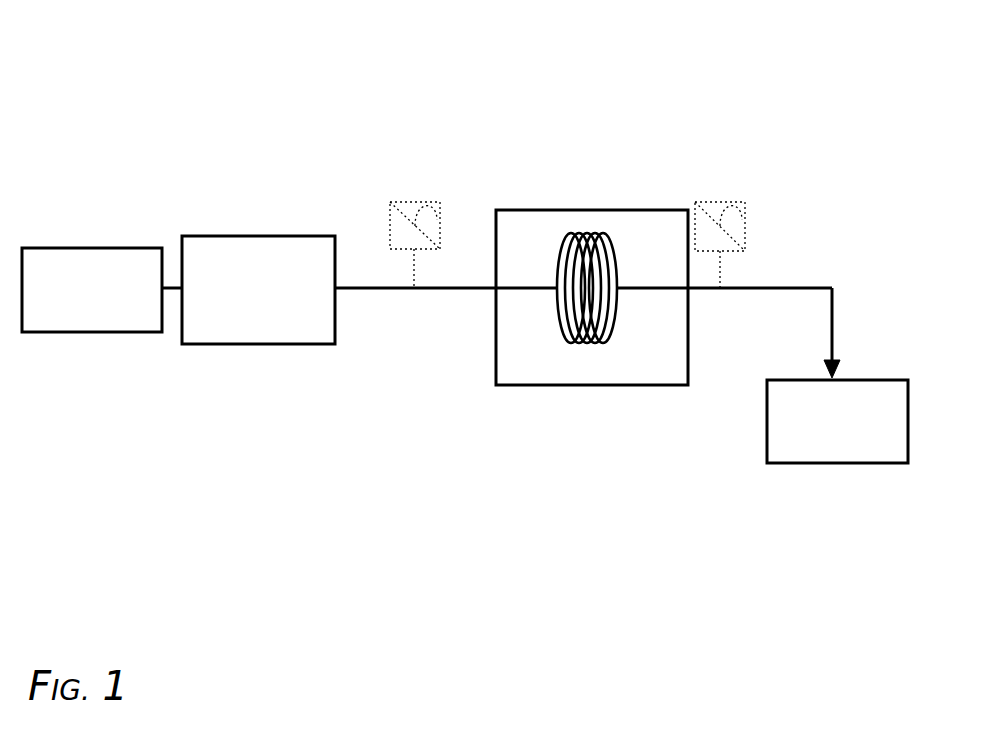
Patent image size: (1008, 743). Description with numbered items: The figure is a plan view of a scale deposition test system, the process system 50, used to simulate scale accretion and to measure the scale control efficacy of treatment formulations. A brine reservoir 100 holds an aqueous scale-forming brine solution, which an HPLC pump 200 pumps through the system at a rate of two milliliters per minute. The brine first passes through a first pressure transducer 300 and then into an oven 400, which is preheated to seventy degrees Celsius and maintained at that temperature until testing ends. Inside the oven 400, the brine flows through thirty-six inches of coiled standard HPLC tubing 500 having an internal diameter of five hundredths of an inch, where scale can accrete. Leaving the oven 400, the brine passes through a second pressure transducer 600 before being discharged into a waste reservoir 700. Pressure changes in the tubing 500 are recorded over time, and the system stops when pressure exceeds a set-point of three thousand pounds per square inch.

The process system 50 is at (65, 46).
The brine reservoir 100 is at (89, 333).
The HPLC pump 200 is at (206, 346).
The first pressure transducer 300 is at (400, 202).
The oven 400 is at (543, 386).
The HPLC tubing 500 is at (583, 235).
The second pressure transducer 600 is at (730, 202).
The waste reservoir 700 is at (840, 465).